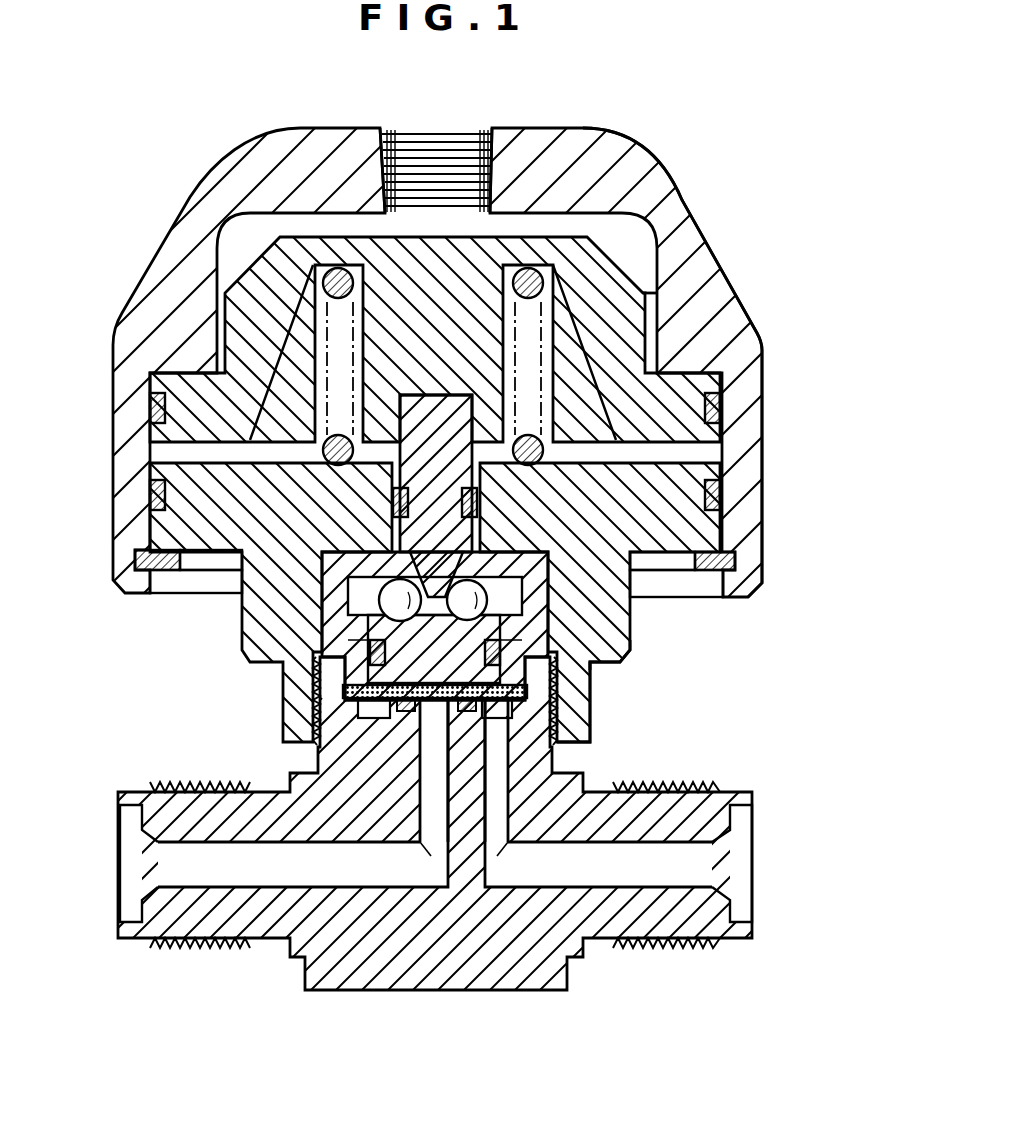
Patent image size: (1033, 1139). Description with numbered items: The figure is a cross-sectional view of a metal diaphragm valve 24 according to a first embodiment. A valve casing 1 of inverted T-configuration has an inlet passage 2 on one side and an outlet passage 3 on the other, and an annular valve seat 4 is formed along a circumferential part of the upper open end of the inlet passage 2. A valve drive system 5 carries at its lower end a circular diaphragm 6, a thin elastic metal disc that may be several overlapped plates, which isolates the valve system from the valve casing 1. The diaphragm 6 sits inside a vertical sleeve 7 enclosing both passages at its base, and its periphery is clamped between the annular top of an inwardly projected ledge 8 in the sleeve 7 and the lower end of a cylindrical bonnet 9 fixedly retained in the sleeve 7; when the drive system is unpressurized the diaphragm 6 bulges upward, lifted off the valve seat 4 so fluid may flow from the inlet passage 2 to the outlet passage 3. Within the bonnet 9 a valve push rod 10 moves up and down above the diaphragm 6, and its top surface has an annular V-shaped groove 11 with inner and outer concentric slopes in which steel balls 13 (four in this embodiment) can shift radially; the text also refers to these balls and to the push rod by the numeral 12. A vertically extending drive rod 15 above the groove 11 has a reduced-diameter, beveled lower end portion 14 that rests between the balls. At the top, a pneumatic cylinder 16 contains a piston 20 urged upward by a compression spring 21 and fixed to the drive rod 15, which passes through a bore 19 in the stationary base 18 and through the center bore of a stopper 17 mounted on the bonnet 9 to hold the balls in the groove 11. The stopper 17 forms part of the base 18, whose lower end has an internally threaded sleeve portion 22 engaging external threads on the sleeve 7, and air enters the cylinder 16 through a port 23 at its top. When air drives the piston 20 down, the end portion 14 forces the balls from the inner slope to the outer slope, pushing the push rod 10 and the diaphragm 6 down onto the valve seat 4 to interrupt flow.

The valve casing 1 is at (499, 995).
The inlet passage 2 is at (392, 886).
The outlet passage 3 is at (610, 880).
The annular valve seat 4 is at (405, 715).
The valve drive system 5 is at (160, 240).
The circular diaphragm 6 is at (448, 725).
The vertical sleeve 7 is at (588, 742).
The inwardly projected ledge 8 is at (578, 681).
The cylindrical bonnet 9 is at (580, 636).
The valve push rod 10 is at (312, 690).
The annular groove 11 is at (497, 605).
The steel balls 12 is at (328, 608).
The steel balls 13 is at (492, 565).
The lower end portion 14 is at (452, 580).
The drive rod 15 is at (445, 395).
The pneumatic cylinder 16 is at (762, 326).
The stopper 17 is at (575, 552).
The stationary base 18 is at (695, 466).
The bore 19 is at (477, 505).
The piston 20 is at (630, 310).
The compression spring 21 is at (550, 267).
The internally threaded sleeve portion 22 is at (590, 718).
The port 23 is at (470, 128).
The metal diaphragm valve 24 is at (684, 134).